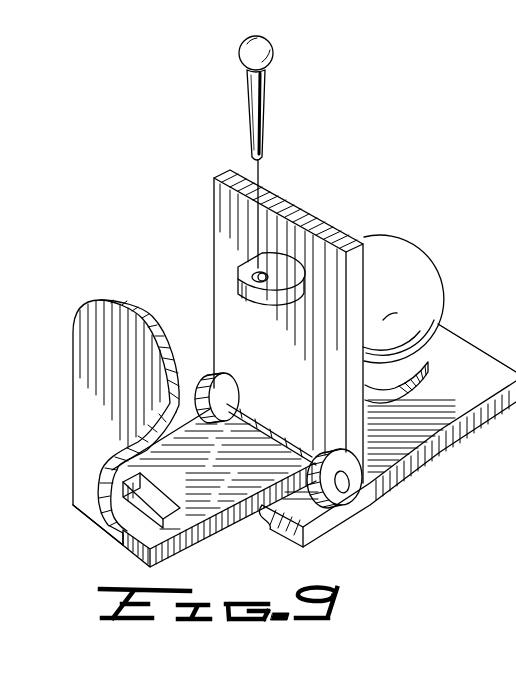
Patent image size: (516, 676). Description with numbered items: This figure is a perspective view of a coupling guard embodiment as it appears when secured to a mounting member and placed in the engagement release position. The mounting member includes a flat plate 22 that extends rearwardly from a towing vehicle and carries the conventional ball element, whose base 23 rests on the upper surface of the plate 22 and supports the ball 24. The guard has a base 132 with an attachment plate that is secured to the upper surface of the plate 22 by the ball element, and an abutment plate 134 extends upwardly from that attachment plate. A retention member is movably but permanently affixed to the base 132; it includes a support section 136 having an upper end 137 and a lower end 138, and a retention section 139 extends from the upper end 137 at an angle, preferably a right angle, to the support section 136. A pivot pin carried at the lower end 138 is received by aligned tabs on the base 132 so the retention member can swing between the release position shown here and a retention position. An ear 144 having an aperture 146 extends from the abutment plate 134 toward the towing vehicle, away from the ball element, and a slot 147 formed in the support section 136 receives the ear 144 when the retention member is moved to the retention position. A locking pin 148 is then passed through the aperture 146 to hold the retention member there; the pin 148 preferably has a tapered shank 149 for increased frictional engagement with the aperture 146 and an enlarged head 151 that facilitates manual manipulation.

The plate 22 is at (385, 490).
The base 23 is at (421, 360).
The ball 24 is at (421, 270).
The base 132 is at (478, 330).
The abutment plate 134 is at (217, 201).
The support section 136 is at (204, 538).
The upper end 137 is at (132, 567).
The lower end 138 is at (164, 418).
The retention section 139 is at (125, 300).
The ear 144 is at (264, 282).
The aperture 146 is at (260, 272).
The slot 147 is at (152, 498).
The locking pin 148 is at (263, 122).
The tapered shank 149 is at (256, 152).
The enlarged head 151 is at (273, 52).